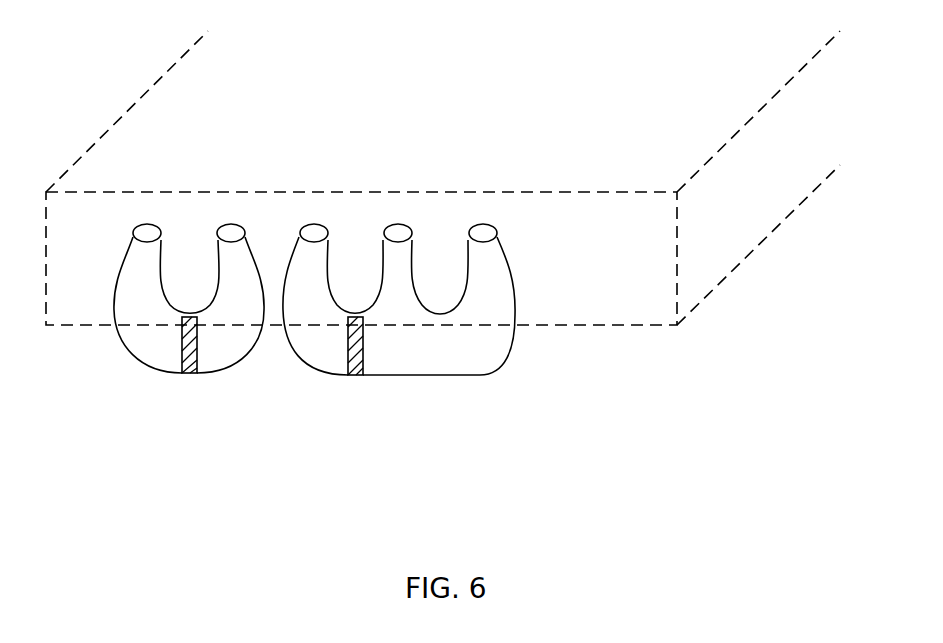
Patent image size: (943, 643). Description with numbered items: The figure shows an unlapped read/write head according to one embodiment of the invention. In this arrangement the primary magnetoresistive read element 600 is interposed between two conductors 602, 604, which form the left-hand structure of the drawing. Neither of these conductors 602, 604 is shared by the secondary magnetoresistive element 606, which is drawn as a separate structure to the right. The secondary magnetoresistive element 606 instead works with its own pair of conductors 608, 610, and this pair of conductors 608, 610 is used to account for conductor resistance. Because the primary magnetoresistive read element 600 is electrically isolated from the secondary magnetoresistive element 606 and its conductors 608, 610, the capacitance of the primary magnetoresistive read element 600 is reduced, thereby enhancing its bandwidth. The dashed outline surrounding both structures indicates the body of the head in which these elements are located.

The primary magnetoresistive read element 600 is at (190, 373).
The conductor 602 is at (125, 347).
The conductor 604 is at (237, 365).
The secondary magnetoresistive element 606 is at (355, 375).
The conductor 608 is at (387, 272).
The conductor 610 is at (472, 275).